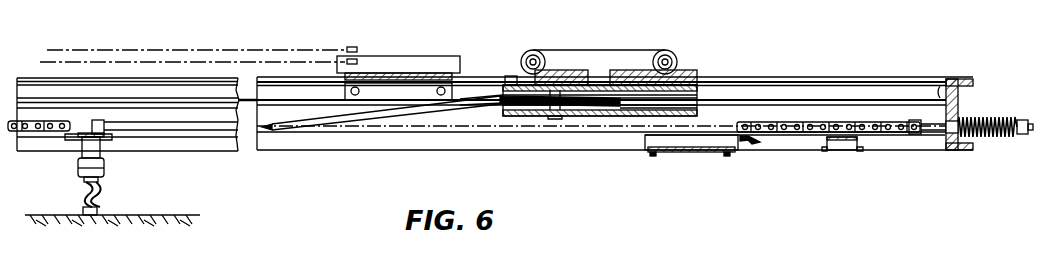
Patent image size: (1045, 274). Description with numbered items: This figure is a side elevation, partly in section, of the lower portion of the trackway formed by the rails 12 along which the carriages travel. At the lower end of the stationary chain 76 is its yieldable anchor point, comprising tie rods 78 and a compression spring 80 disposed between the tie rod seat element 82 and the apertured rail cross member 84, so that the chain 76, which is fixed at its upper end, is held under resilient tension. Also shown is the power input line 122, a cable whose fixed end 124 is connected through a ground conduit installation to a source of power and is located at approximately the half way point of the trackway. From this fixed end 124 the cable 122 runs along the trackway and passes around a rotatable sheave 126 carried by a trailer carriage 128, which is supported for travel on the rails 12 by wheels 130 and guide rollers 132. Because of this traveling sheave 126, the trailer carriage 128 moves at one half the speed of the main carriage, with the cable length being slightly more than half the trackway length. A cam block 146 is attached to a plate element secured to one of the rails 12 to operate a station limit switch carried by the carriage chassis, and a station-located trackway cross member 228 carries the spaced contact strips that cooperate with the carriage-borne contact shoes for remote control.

The rails 12 is at (858, 50).
The fixed end of power input line 124 is at (90, 128).
The cam blocks 146 is at (437, 32).
The power input line 122 is at (403, 113).
The rotatable sheave 126 is at (493, 95).
The trailer carriage 128 is at (700, 100).
The guide rollers 132 is at (512, 76).
The wheels 130 is at (538, 50).
The trackway cross members 228 is at (690, 153).
The stationary chain 76 is at (782, 132).
The tie rods 78 is at (931, 132).
The compression spring 80 is at (985, 116).
The tie rod seat element 82 is at (1020, 138).
The apertured rail cross member 84 is at (946, 86).